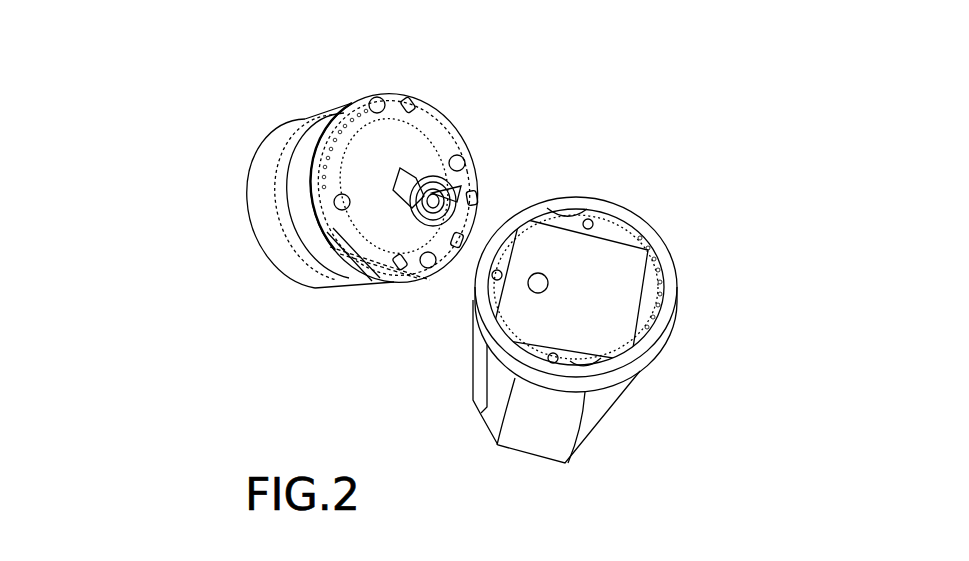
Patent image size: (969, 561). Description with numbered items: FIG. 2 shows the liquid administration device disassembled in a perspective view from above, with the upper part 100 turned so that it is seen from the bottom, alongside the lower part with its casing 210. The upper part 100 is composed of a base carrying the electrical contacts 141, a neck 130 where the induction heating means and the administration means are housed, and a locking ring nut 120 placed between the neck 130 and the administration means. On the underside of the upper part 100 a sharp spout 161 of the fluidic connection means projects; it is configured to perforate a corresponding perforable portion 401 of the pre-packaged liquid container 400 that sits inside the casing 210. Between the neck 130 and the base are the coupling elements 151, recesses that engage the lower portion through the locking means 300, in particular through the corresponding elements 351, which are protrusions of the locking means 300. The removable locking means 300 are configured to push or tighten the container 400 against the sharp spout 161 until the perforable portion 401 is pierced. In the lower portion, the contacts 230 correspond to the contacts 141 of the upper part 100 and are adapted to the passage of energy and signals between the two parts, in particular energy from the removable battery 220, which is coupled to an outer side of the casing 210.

The device upper part 100 is at (300, 209).
The locking ring nut 120 is at (278, 243).
The neck 130 is at (299, 168).
The electrical contacts 141 is at (332, 114).
The coupling elements 151 is at (448, 148).
The sharp spout 161 is at (446, 170).
The casing 210 is at (605, 291).
The removable battery 220 is at (472, 359).
The electrical contacts 230 is at (658, 297).
The locking means 300 is at (666, 291).
The coupling elements 351 is at (567, 214).
The pre-packaged liquid container 400 is at (615, 279).
The perforable portion 401 is at (536, 273).